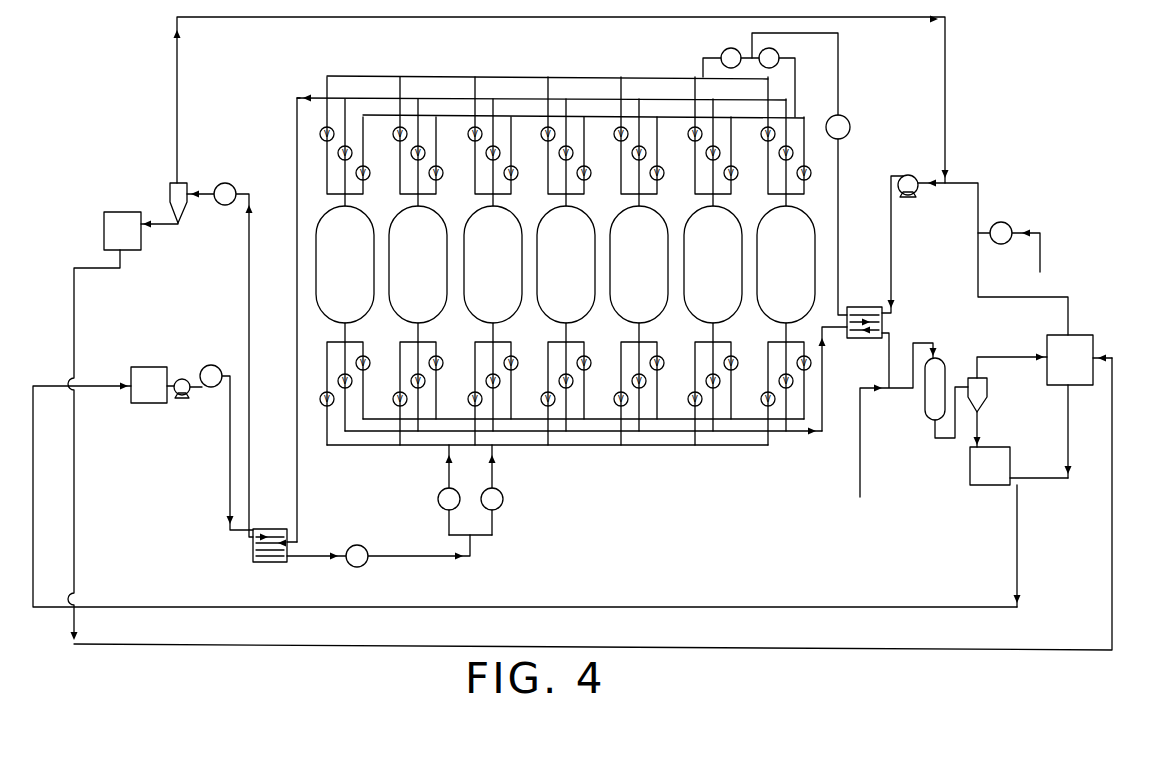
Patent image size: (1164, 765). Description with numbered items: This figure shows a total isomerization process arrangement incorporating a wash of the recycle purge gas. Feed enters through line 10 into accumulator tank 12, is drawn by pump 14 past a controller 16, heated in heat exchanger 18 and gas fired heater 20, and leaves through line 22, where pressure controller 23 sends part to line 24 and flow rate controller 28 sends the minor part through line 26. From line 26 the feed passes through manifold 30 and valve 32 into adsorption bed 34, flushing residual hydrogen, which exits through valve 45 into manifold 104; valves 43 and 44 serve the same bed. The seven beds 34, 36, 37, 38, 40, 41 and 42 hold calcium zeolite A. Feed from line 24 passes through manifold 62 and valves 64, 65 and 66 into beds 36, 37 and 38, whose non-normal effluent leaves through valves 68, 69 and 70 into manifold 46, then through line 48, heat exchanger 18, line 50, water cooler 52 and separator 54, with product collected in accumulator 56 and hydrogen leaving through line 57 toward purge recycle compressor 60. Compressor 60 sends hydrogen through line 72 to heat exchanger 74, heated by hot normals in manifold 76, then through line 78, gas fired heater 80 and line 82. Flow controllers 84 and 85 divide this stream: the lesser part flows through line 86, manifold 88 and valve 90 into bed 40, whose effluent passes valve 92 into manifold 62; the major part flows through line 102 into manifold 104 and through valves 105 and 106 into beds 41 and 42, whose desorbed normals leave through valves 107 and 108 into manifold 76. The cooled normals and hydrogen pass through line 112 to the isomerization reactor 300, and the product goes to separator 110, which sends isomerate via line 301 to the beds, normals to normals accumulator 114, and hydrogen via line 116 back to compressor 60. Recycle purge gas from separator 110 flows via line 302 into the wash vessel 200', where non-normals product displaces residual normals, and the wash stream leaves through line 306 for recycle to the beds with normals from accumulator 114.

The line 10 is at (108, 386).
The accumulator tank 12 is at (131, 370).
The pump 14 is at (182, 379).
The flow meter 16 is at (211, 365).
The heat exchanger 18 is at (275, 529).
The gas fired heater 20 is at (349, 545).
The line 22 is at (444, 557).
The pressure controller 23 is at (440, 507).
The line 24 is at (447, 470).
The line 26 is at (492, 465).
The flow rate controller 28 is at (503, 503).
The manifold 30 is at (340, 445).
The valve 32 is at (322, 405).
The adsorption bed 34 is at (318, 224).
The adsorption bed 36 is at (392, 224).
The adsorption bed 37 is at (468, 224).
The adsorption bed 38 is at (542, 224).
The adsorption bed 40 is at (616, 224).
The adsorption bed 41 is at (690, 224).
The adsorption bed 42 is at (763, 224).
The valve 43 is at (321, 134).
The valve 44 is at (338, 151).
The valve 45 is at (370, 178).
The manifold 46 is at (430, 100).
The line 48 is at (292, 269).
The line 50 is at (243, 269).
The water cooler 52 is at (233, 186).
The separator 54 is at (190, 183).
The accumulator 56 is at (123, 202).
The line 57 is at (183, 83).
The purge recycle compressor 60 is at (905, 175).
The manifold 62 is at (378, 419).
The valve 64 is at (451, 360).
The valve 65 is at (526, 360).
The valve 66 is at (599, 360).
The valve 68 is at (411, 151).
The valve 69 is at (486, 151).
The valve 70 is at (559, 151).
The line 72 is at (891, 248).
The heat exchanger 74 is at (862, 307).
The manifold 76 is at (376, 431).
The line 78 is at (838, 231).
The gas fired heater 80 is at (848, 120).
The line 82 is at (838, 50).
The flow controller 84 is at (726, 48).
The flow controller 85 is at (778, 50).
The line 86 is at (700, 60).
The manifold 88 is at (446, 75).
The valve 90 is at (632, 151).
The valve 92 is at (672, 360).
The line 102 is at (799, 85).
The manifold 104 is at (750, 118).
The valve 105 is at (736, 179).
The valve 106 is at (811, 176).
The valve 107 is at (705, 381).
The valve 108 is at (778, 381).
The separator 110 is at (985, 378).
The line 112 is at (897, 392).
The normals accumulator 114 is at (970, 460).
The line 116 is at (978, 268).
The wash vessel 200' is at (1093, 353).
The isomerization reactor 300 is at (921, 420).
The line 301 is at (704, 603).
The line 302 is at (1008, 348).
The line 306 is at (1078, 478).